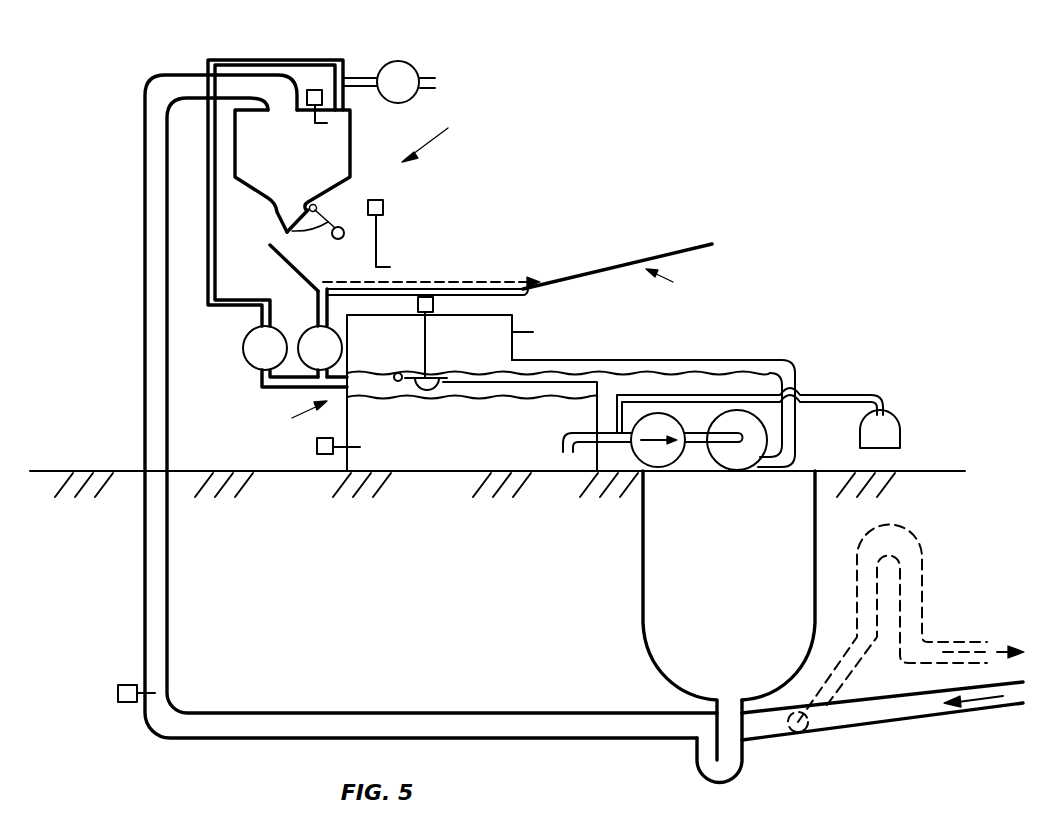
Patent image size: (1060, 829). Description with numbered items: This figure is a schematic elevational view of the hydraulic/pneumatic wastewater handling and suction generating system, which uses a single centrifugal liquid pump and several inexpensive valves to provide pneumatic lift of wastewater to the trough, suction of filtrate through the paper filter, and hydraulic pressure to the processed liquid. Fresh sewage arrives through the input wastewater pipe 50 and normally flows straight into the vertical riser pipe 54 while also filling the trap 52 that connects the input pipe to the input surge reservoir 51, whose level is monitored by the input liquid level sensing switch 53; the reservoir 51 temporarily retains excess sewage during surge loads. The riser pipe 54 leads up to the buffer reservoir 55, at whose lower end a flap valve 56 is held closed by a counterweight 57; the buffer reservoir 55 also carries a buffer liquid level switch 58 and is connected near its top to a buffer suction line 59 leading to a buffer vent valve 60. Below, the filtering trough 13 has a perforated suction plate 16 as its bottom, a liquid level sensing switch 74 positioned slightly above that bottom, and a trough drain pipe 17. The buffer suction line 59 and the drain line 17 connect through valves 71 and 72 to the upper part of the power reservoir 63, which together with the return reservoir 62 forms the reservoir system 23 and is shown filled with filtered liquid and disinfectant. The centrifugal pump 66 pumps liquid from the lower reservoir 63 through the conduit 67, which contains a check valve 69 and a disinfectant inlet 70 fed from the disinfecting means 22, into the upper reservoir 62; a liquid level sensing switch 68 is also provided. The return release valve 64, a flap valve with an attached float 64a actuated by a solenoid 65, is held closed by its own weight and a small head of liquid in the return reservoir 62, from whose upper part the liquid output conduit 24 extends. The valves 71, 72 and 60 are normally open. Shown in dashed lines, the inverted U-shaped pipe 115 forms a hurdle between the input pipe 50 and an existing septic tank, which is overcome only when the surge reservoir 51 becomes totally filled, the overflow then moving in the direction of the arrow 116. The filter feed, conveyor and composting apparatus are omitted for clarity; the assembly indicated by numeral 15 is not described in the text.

The filtering trough 13 is at (519, 271).
The feed assembly 15 is at (442, 135).
The perforated suction plate 16 is at (422, 283).
The trough drain pipe 17 is at (305, 298).
The disinfecting means 22 is at (901, 432).
The reservoir system 23 is at (300, 401).
The liquid output conduit 24 is at (515, 320).
The input wastewater pipe 50 is at (882, 718).
The input surge reservoir 51 is at (734, 569).
The trap 52 is at (696, 765).
The input liquid level sensing switch 53 is at (118, 696).
The vertical riser pipe 54 is at (143, 213).
The buffer reservoir 55 is at (353, 158).
The flap valve 56 is at (322, 213).
The counterweight 57 is at (334, 240).
The buffer liquid level switch 58 is at (310, 112).
The buffer suction line 59 is at (318, 57).
The buffer vent valve 60 is at (419, 73).
The return reservoir 62 is at (520, 348).
The power reservoir 63 is at (474, 455).
The return release valve 64 is at (432, 370).
The float 64a is at (428, 388).
The solenoid 65 is at (436, 303).
The centrifugal pump 66 is at (742, 471).
The conduit 67 is at (795, 376).
The liquid level sensing switch 68 is at (317, 450).
The check valve 69 is at (686, 467).
The disinfectant inlet 70 is at (603, 413).
The valve 71 is at (243, 351).
The valve 72 is at (310, 328).
The liquid level sensing switch 74 is at (382, 253).
The inverted U-shaped pipe 115 is at (922, 585).
The arrow 116 is at (988, 650).